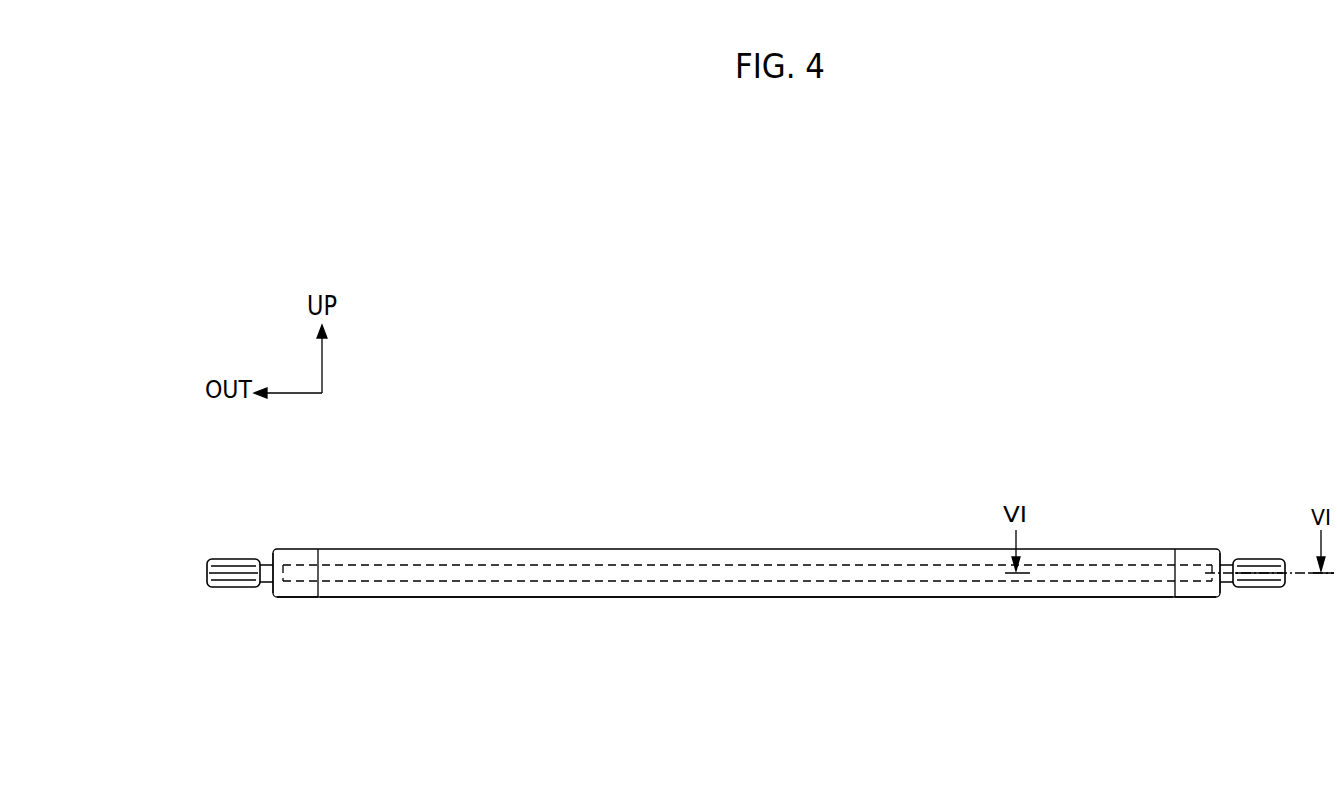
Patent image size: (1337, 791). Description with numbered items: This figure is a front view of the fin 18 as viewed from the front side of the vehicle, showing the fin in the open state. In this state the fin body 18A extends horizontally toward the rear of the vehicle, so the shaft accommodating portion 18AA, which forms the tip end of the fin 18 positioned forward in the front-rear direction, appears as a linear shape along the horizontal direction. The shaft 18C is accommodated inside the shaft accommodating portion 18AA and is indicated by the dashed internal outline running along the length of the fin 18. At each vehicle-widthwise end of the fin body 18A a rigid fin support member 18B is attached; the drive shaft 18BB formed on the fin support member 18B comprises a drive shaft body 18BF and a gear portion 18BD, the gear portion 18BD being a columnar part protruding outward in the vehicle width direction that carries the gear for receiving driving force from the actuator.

The fin 18 is at (852, 628).
The fin body 18A is at (660, 548).
The shaft accommodating portion 18AA is at (690, 598).
The fin support member 18B is at (311, 541).
The drive shaft 18BB is at (282, 550).
The gear portion 18BD is at (227, 583).
The drive shaft body 18BF is at (297, 588).
The shaft 18C is at (935, 576).